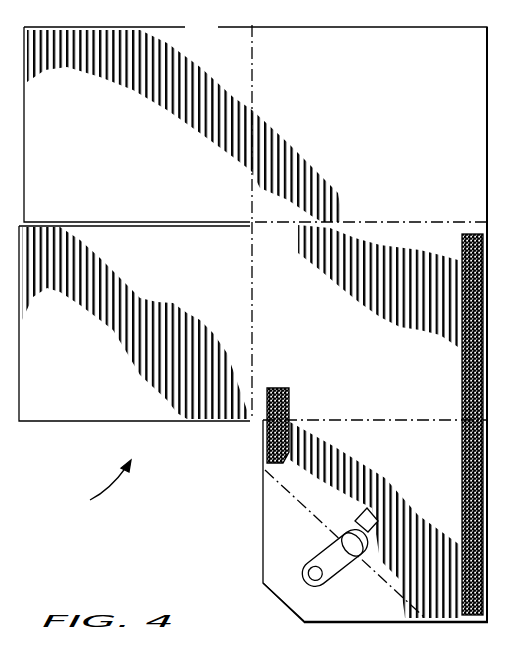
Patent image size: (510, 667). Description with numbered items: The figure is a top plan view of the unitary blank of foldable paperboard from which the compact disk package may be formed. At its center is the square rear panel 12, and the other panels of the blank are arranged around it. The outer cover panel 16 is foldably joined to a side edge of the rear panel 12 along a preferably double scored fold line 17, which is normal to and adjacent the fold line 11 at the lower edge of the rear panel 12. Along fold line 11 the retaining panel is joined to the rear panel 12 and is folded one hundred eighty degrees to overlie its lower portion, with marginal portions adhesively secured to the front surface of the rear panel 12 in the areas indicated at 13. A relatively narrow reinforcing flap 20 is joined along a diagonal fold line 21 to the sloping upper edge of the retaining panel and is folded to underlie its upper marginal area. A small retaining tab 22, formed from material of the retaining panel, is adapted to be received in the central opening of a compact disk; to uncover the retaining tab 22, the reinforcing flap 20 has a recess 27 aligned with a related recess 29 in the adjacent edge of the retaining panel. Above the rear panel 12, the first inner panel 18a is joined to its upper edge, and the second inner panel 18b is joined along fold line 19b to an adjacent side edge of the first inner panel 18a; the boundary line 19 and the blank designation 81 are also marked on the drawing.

The fold line 11 is at (355, 420).
The rear panel 12 is at (430, 336).
The adhesive areas 13 is at (290, 433).
The outer cover panel 16 is at (146, 336).
The double scored fold line 17 is at (256, 320).
The first inner panel 18a is at (382, 135).
The second inner panel 18b is at (153, 136).
The boundary line 19 is at (390, 221).
The fold line 19b is at (253, 168).
The reinforcing flap 20 is at (280, 545).
The diagonal fold line 21 is at (290, 496).
The retaining tab 22 is at (372, 512).
The recess 27 is at (292, 598).
The recess 29 is at (352, 566).
The direction arrow 81 is at (99, 485).